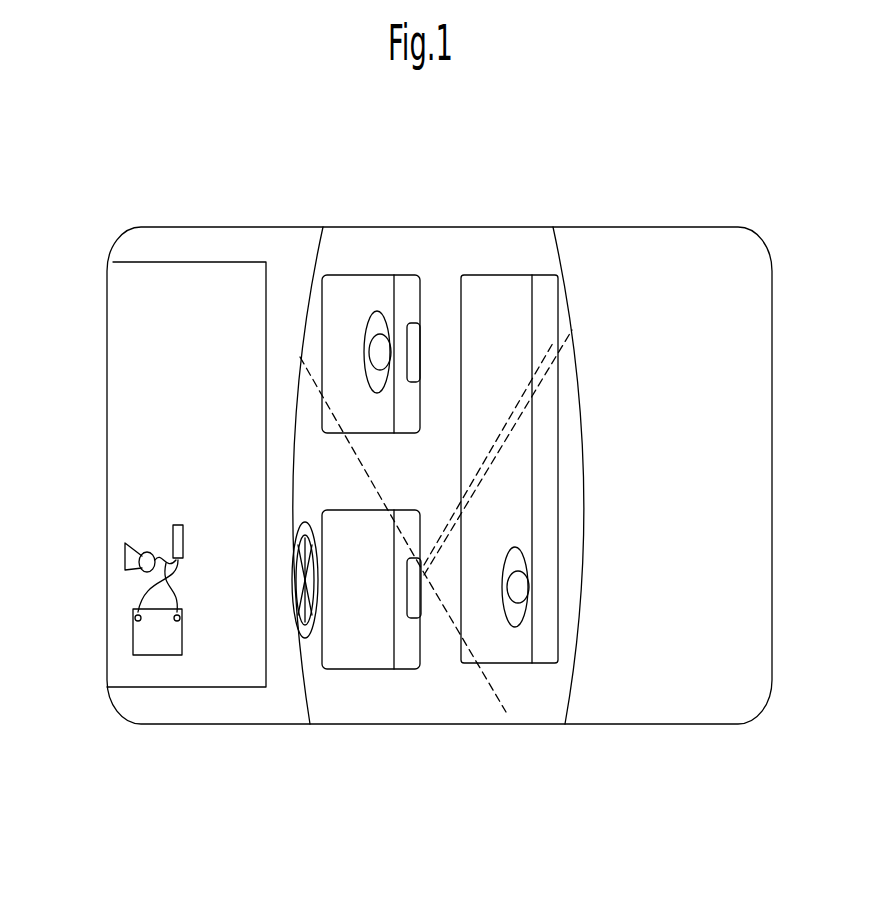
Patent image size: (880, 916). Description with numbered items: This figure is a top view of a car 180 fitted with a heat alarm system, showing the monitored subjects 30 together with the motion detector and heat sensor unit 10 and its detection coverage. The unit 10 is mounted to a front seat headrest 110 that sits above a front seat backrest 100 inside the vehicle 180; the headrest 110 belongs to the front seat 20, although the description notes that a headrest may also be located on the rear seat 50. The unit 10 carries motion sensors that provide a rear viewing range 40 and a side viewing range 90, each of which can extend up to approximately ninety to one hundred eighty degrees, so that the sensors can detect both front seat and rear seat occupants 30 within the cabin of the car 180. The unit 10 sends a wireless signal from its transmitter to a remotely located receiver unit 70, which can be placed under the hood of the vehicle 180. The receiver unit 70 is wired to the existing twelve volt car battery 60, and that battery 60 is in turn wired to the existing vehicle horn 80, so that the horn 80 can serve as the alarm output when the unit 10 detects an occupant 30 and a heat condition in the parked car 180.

The motion detector and heat sensor unit 10 is at (447, 685).
The front seat 20 is at (365, 661).
The monitored subjects 30 is at (450, 481).
The rear viewing range 40 is at (533, 595).
The rear seat 50 is at (554, 469).
The car battery 60 is at (172, 713).
The receiver unit 70 is at (209, 657).
The vehicle horn 80 is at (107, 607).
The side viewing range 90 is at (386, 430).
The front seat backrest 100 is at (347, 694).
The front seat headrest 110 is at (440, 688).
The vehicle 180 is at (439, 541).